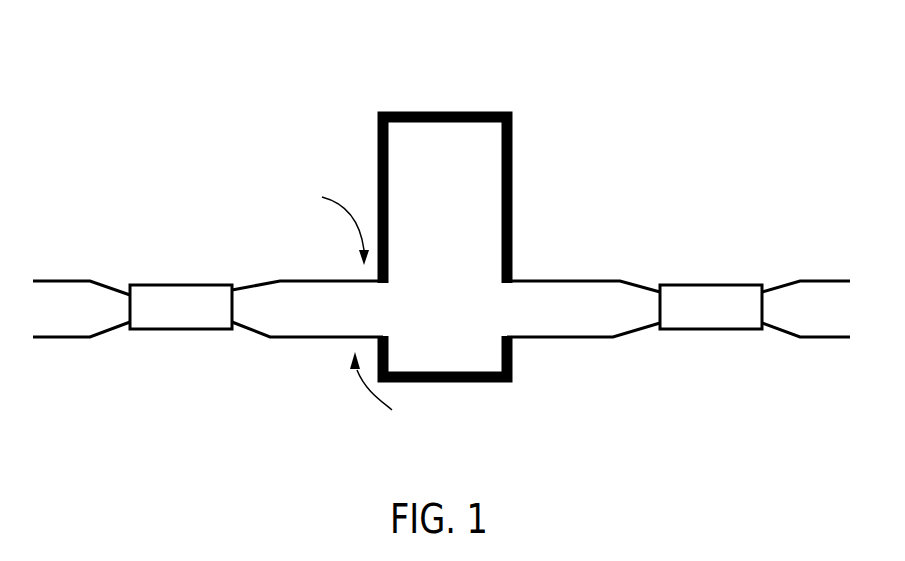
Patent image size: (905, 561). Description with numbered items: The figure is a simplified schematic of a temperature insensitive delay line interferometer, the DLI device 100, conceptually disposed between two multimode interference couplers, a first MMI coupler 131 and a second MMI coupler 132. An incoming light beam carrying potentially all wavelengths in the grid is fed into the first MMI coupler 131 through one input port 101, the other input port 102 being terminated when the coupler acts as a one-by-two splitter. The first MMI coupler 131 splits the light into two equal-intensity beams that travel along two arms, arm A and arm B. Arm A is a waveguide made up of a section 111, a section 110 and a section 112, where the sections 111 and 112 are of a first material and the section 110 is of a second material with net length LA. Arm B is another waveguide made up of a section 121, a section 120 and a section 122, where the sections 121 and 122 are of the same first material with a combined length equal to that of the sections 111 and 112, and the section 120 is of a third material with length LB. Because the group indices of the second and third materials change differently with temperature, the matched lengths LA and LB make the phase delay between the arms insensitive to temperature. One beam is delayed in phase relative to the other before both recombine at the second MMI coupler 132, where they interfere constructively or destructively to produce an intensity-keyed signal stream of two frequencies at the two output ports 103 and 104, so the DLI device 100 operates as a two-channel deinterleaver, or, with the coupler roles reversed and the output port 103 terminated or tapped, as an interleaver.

The delay line interferometer (DLI) device 100 is at (538, 74).
The input port 101 is at (110, 248).
The second input waveguide 102 is at (70, 337).
The output port 103 is at (800, 281).
The output port 104 is at (787, 332).
The section 110 is at (511, 168).
The section 111 is at (280, 281).
The section 112 is at (575, 281).
The section 120 is at (512, 378).
The section 121 is at (278, 337).
The section 122 is at (607, 337).
The first MMI coupler 131 is at (163, 330).
The second MMI coupler 132 is at (698, 329).